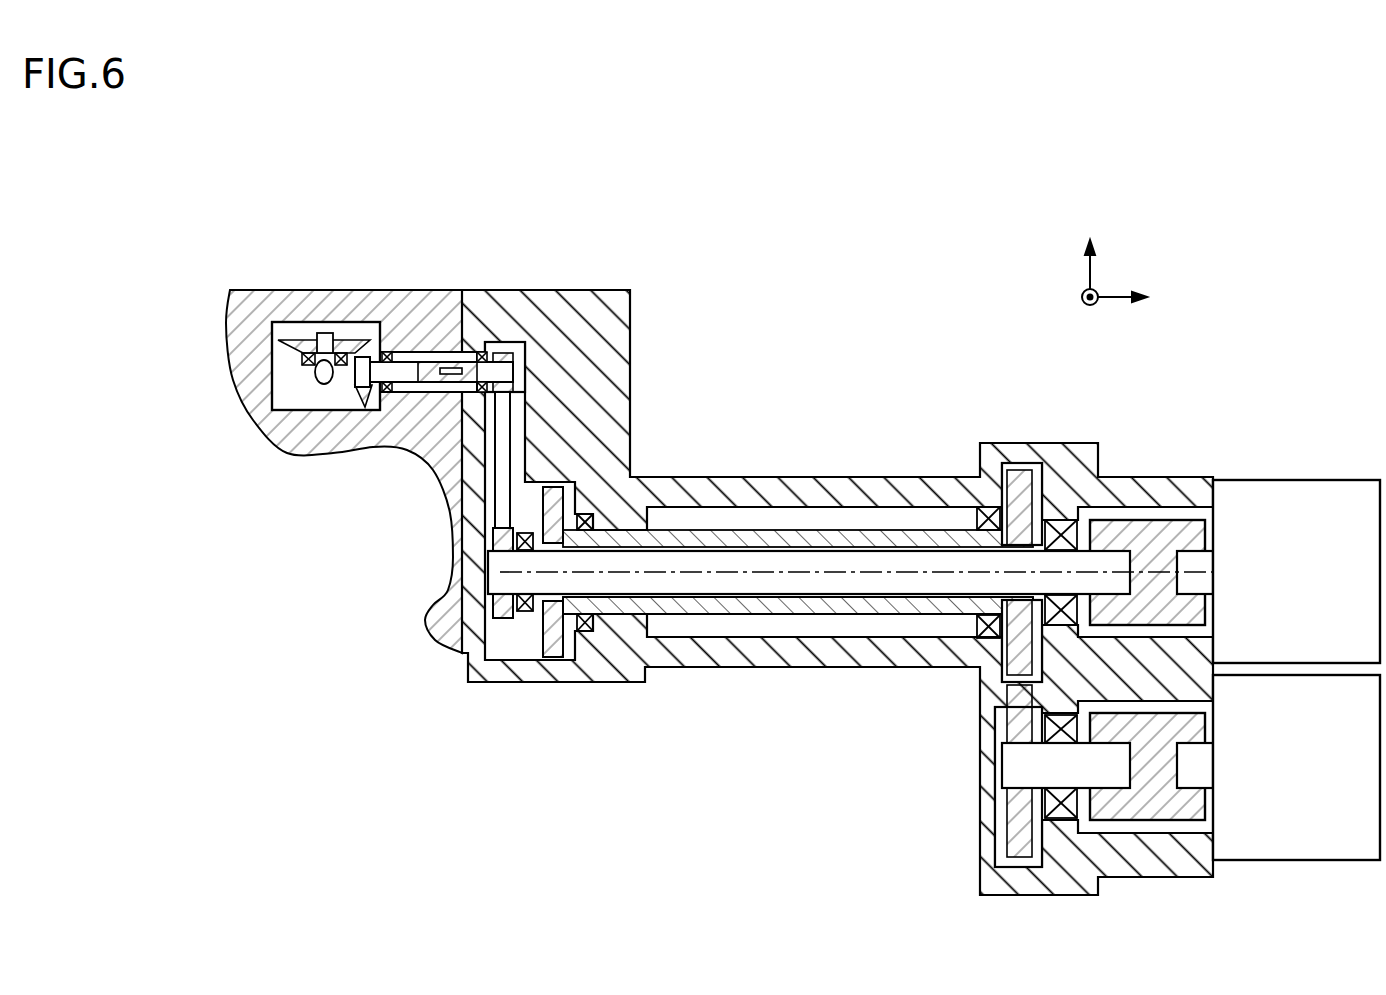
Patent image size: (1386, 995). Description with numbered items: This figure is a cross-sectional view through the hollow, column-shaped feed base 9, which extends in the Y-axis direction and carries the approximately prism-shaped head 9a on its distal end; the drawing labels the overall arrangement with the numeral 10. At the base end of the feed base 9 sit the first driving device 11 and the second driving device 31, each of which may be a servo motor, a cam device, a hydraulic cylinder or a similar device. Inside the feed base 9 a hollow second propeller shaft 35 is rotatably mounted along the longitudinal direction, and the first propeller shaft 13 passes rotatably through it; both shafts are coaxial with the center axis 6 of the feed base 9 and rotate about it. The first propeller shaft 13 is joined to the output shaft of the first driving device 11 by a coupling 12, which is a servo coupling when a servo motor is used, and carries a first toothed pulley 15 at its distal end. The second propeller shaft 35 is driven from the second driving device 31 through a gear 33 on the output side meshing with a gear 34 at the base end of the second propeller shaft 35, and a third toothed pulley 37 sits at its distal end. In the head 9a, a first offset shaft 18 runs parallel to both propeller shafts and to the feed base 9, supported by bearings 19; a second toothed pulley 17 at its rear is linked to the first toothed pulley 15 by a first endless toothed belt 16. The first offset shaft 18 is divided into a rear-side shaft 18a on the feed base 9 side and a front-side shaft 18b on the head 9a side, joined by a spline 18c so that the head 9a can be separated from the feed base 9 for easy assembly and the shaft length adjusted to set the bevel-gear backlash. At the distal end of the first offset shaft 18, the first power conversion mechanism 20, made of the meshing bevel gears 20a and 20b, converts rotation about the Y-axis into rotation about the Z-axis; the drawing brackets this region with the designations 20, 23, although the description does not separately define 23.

The center axis 6 is at (1235, 573).
The feed base 9 is at (822, 477).
The head 9a is at (250, 290).
The drive device 10 is at (1338, 228).
The first driving device 11 is at (1290, 478).
The coupling 12 is at (1148, 518).
The first propeller shaft 13 is at (817, 604).
The first toothed pulley 15 is at (492, 604).
The first endless toothed belt 16 is at (513, 433).
The second toothed pulley 17 is at (502, 353).
The first offset shaft 18 is at (488, 195).
The rear-side shaft 18a is at (487, 373).
The front-side shaft 18b is at (400, 373).
The spline 18c is at (447, 372).
The bearings 19 is at (480, 392).
The first power conversion mechanism 20 is at (290, 440).
The bevel gear 20a is at (360, 393).
The bevel gear 20b is at (283, 352).
The detector 23 is at (326, 366).
The second driving device 31 is at (1287, 861).
The gear 33 is at (1023, 858).
The gear 34 is at (1007, 638).
The second propeller shaft 35 is at (737, 614).
The third toothed pulley 37 is at (543, 631).